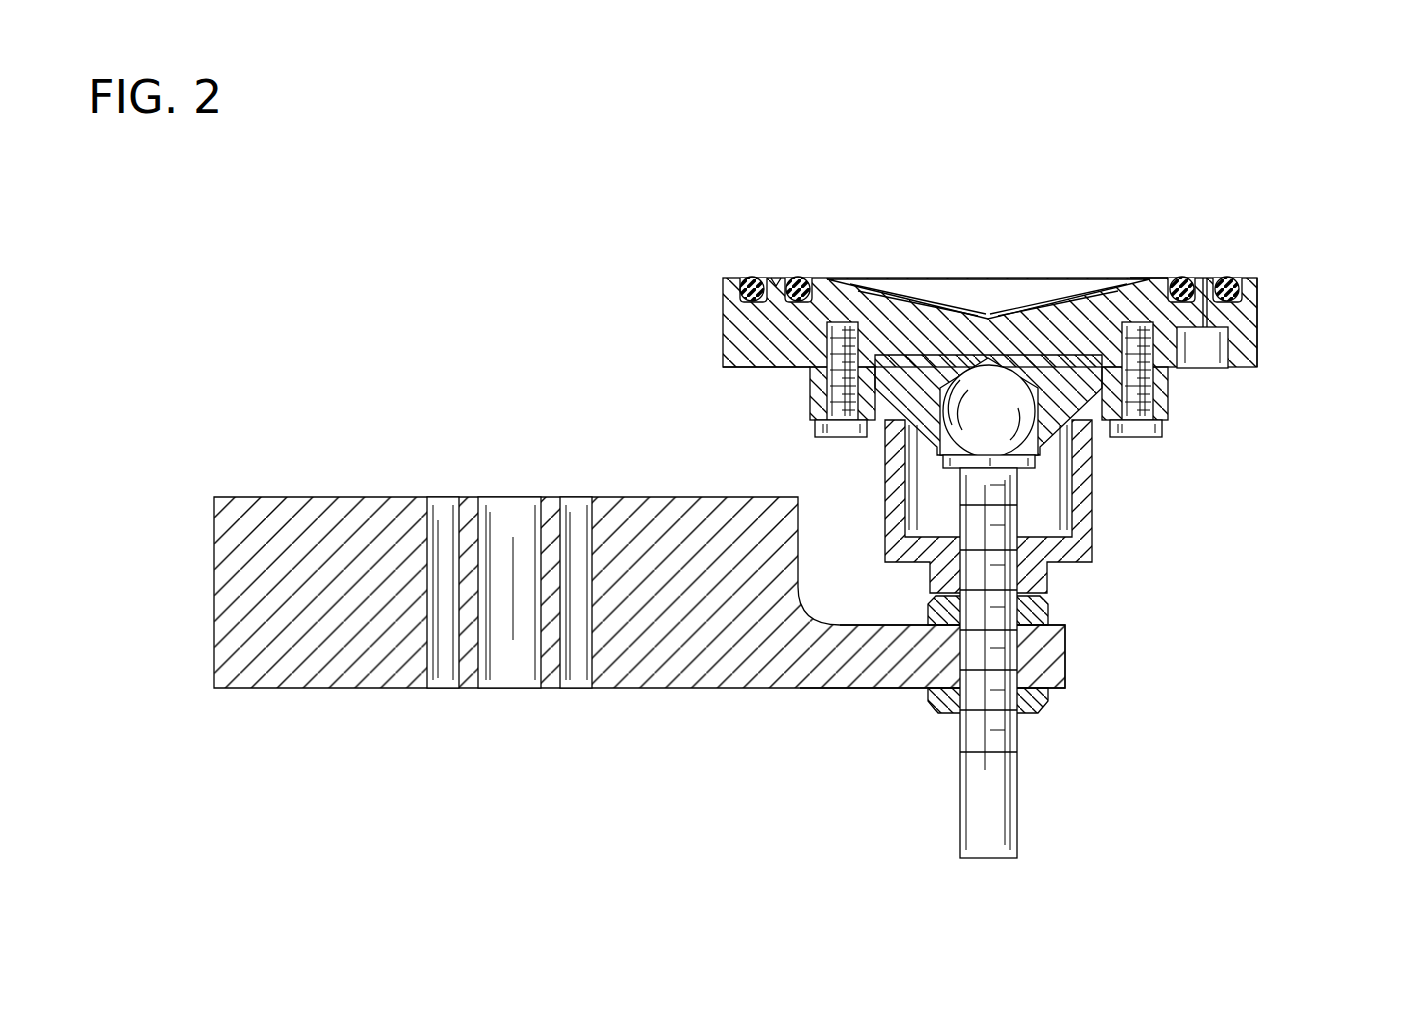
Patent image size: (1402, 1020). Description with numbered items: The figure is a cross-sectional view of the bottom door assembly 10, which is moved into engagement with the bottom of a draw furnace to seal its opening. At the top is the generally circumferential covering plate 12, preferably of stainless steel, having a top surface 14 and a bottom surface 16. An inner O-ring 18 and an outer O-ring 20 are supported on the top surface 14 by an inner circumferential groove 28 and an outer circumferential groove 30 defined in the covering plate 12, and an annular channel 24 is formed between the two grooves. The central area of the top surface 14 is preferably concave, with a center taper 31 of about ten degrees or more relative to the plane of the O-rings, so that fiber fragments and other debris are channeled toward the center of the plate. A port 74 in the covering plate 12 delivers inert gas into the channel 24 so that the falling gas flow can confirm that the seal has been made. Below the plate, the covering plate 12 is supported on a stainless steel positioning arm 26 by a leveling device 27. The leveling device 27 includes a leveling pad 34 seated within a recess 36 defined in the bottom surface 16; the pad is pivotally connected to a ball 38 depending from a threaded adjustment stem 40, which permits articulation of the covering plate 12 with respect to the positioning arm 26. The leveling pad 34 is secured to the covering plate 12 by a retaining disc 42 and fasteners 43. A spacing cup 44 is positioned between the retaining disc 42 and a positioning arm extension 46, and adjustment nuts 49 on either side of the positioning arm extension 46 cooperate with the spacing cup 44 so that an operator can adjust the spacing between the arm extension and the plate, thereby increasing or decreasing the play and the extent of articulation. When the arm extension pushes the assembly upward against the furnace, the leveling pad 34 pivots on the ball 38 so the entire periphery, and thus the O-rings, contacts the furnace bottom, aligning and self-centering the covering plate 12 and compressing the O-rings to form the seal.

The bottom door assembly 10 is at (370, 272).
The covering plate 12 is at (750, 330).
The top surface 14 is at (1020, 278).
The bottom surface 16 is at (755, 370).
The inner O-ring 18 is at (1180, 280).
The outer O-ring 20 is at (1230, 280).
The channel 24 is at (776, 288).
The positioning arm 26 is at (318, 690).
The leveling device 27 is at (1125, 542).
The inner circumferential groove 28 is at (1142, 280).
The outer circumferential groove 30 is at (1262, 290).
The funnel inner surface 31 is at (968, 298).
The leveling pad 34 is at (1100, 397).
The recess 36 is at (840, 350).
The ball 38 is at (1045, 445).
The threaded adjustment stem 40 is at (1018, 787).
The retaining disc 42 is at (1170, 392).
The fasteners 43 is at (818, 430).
The spacing cup 44 is at (885, 470).
The positioning arm extension 46 is at (882, 690).
The adjustment nuts 49 is at (1050, 603).
The port 74 is at (1205, 285).